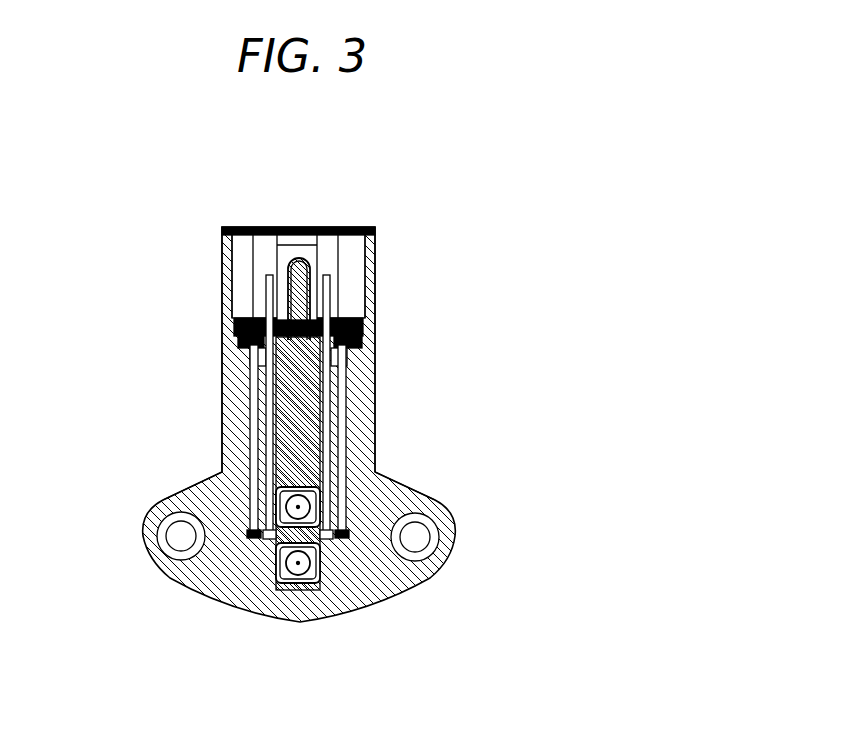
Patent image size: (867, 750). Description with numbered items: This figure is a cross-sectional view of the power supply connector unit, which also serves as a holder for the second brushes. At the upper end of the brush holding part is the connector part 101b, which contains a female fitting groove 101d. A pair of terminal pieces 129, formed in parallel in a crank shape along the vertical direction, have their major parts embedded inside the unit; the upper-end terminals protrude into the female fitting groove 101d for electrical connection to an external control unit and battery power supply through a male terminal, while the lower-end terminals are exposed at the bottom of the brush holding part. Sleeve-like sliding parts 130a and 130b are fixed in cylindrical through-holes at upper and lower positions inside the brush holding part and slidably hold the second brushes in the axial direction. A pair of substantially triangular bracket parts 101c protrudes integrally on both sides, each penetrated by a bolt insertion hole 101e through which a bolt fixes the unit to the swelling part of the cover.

The terminal piece 129 is at (269, 285).
The connector part 101b is at (222, 298).
The bracket part 101c is at (193, 503).
The female fitting groove 101d is at (353, 290).
The bolt insertion hole 101e is at (145, 530).
The sliding part 130a is at (323, 530).
The sliding part 130b is at (309, 585).